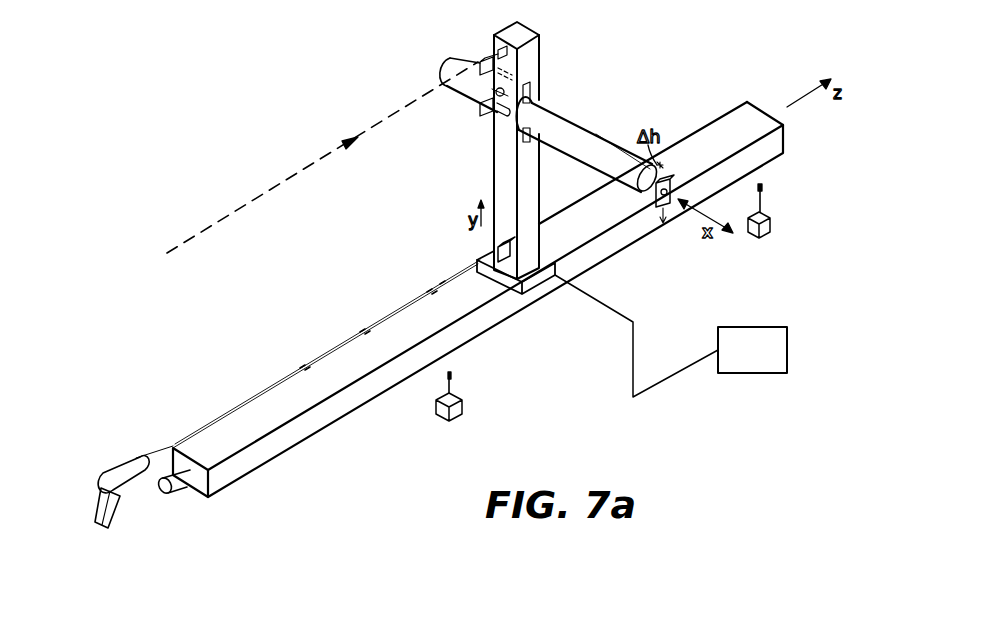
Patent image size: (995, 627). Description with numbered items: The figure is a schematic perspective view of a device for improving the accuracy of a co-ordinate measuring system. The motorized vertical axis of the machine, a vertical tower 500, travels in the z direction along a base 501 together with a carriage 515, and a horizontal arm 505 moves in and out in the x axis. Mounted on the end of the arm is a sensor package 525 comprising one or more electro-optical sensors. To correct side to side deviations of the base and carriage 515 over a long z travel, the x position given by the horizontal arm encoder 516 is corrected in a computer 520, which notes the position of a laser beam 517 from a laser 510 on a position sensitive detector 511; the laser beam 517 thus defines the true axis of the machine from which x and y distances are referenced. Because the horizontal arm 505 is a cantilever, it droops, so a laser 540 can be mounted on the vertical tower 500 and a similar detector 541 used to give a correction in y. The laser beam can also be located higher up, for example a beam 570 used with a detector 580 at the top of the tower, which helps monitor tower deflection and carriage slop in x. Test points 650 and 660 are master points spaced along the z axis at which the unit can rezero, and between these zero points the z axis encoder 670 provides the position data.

The vertical tower 500 is at (538, 197).
The base 501 is at (781, 153).
The horizontal arm 505 is at (551, 101).
The laser 510 is at (137, 464).
The position sensitive detector 511 is at (490, 248).
The carriage 515 is at (537, 283).
The horizontal arm encoder 516 is at (497, 95).
The laser beam 517 is at (174, 443).
The computer 520 is at (733, 365).
The sensor package 525 is at (677, 182).
The laser 540 is at (503, 112).
The detector 541 is at (628, 180).
The beam 570 is at (270, 186).
The detector 580 is at (496, 52).
The test point 650 is at (452, 380).
The test point 660 is at (763, 197).
The z axis encoder 670 is at (180, 499).